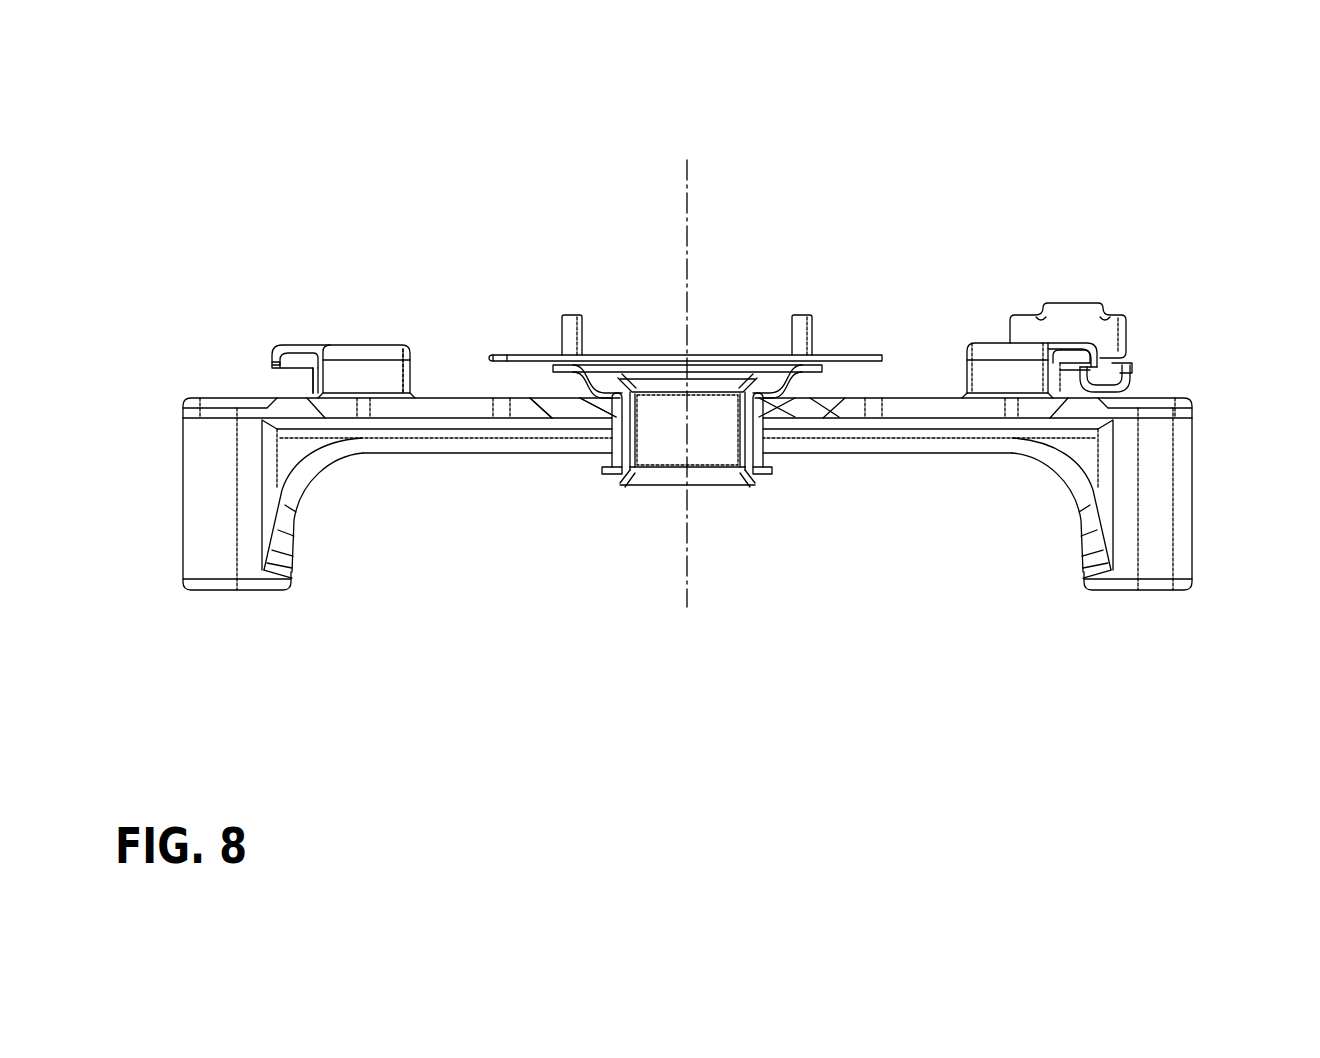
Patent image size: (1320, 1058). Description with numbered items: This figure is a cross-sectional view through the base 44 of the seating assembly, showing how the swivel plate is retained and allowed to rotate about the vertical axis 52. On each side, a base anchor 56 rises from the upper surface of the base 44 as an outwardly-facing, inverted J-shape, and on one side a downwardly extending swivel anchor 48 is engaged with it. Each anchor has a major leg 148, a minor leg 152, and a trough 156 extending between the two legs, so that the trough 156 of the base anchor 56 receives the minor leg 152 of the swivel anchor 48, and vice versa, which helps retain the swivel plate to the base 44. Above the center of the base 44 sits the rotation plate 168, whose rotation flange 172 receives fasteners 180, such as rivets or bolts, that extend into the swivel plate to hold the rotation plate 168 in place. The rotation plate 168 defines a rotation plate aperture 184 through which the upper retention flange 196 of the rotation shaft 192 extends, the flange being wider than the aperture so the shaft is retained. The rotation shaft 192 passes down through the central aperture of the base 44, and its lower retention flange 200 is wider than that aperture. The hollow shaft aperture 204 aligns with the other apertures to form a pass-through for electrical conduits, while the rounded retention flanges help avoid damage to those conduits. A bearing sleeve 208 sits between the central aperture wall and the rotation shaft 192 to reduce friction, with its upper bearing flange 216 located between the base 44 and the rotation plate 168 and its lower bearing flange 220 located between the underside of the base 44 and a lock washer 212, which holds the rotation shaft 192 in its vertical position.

The base 44 is at (967, 163).
The swivel anchor 48 is at (1084, 313).
The vertical axis 52 is at (688, 200).
The base anchor 56 is at (363, 341).
The major leg 148 is at (402, 365).
The minor leg 152 is at (265, 362).
The trough 156 is at (305, 345).
The rotation plate 168 is at (635, 353).
The rotation flange 172 is at (508, 355).
The fastener 180 is at (567, 320).
The rotation plate aperture 184 is at (621, 396).
The rotation shaft 192 is at (632, 490).
The upper retention flange 196 is at (748, 378).
The lower retention flange 200 is at (755, 478).
The shaft aperture 204 is at (715, 408).
The bearing sleeve 208 is at (757, 439).
The lock washer 212 is at (607, 471).
The upper bearing flange 216 is at (753, 398).
The lower bearing flange 220 is at (774, 462).